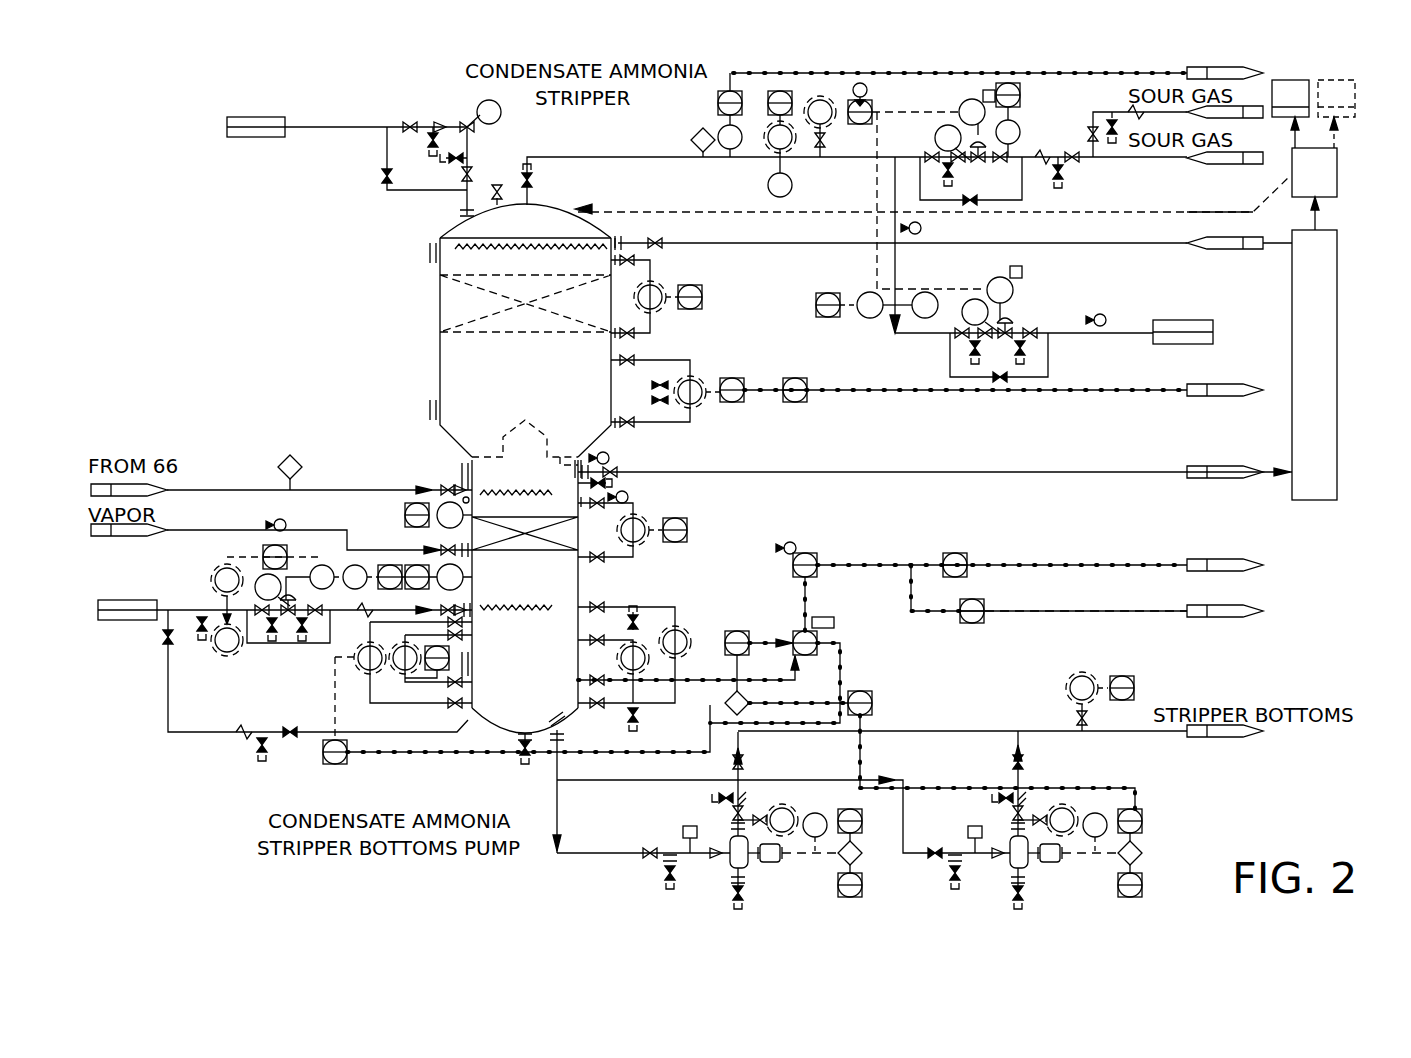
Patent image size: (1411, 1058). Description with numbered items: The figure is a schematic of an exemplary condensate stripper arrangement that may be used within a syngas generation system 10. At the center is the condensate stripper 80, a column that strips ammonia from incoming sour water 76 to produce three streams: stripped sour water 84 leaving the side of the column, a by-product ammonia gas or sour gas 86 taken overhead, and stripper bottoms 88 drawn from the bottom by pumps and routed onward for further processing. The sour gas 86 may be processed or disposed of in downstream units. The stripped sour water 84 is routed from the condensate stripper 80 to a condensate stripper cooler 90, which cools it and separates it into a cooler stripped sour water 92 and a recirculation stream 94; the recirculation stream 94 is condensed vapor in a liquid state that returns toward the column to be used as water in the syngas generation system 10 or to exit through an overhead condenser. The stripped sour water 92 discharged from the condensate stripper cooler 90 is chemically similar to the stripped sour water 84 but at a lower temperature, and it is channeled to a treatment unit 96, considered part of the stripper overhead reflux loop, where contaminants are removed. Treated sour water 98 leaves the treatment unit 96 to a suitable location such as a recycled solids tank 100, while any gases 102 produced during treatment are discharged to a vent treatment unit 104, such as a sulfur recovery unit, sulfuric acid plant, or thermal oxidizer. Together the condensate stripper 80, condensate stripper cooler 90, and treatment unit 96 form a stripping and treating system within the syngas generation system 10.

The syngas generation system 10 is at (202, 102).
The condensate stripper 80 is at (440, 117).
The sour gas 86 is at (605, 157).
The sour water 76 is at (234, 490).
The stripped sour water 84 is at (975, 472).
The recirculation stream 94 is at (1105, 243).
The treated sour water 98 is at (1178, 212).
The recycled solids tank 100 is at (1291, 114).
The vent treatment unit 104 is at (1337, 98).
The gases 102 is at (1340, 135).
The treatment unit 96 is at (1314, 172).
The stripped sour water 92 is at (1320, 218).
The condensate stripper cooler 90 is at (1314, 365).
The stripper bottoms 88 is at (1140, 731).